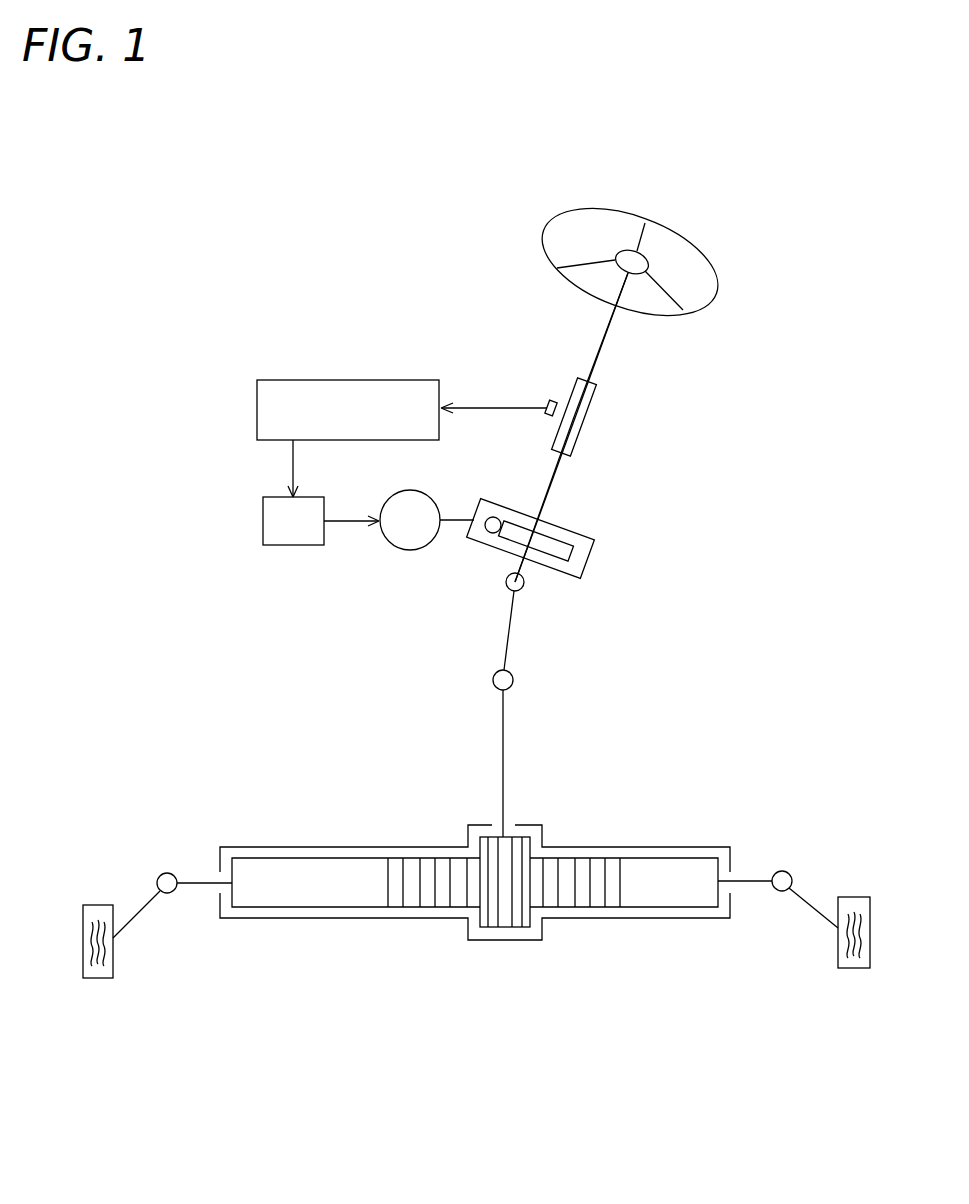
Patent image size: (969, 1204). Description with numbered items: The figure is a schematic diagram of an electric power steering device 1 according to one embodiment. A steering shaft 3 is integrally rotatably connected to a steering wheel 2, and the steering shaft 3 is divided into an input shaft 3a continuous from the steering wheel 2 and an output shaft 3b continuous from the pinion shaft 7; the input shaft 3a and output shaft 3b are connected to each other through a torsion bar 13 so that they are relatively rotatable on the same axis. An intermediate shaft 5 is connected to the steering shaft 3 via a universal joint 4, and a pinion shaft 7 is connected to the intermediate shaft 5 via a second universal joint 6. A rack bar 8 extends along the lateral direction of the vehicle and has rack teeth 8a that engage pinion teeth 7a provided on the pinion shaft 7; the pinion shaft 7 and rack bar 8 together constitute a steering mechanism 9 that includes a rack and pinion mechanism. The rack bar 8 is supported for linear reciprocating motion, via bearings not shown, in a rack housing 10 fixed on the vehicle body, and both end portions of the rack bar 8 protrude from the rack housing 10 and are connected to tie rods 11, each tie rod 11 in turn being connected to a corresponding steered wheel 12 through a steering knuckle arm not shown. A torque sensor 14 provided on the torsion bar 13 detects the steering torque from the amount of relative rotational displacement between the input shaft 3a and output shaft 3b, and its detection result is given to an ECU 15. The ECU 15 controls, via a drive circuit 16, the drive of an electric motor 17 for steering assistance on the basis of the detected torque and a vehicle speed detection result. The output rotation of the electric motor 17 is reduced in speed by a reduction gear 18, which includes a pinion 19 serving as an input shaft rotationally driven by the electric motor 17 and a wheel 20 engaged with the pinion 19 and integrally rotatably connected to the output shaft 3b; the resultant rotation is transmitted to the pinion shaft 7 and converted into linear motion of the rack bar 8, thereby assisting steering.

The electric power steering device 1 is at (740, 208).
The steering wheel 2 is at (620, 212).
The steering shaft 3 is at (607, 327).
The input shaft 3a is at (597, 351).
The output shaft 3b is at (553, 484).
The universal joint 4 is at (525, 583).
The intermediate shaft 5 is at (510, 630).
The universal joint 6 is at (513, 680).
The pinion shaft 7 is at (505, 787).
The pinion teeth 7a is at (513, 928).
The rack bar 8 is at (578, 908).
The rack teeth 8a is at (444, 898).
The steering mechanism 9 is at (548, 940).
The rack housing 10 is at (373, 847).
The tie rod 11 is at (147, 907).
The steered wheel 12 is at (98, 978).
The torsion bar 13 is at (585, 418).
The torque sensor 14 is at (549, 400).
The ECU 15 is at (287, 380).
The drive circuit 16 is at (263, 520).
The electric motor 17 is at (410, 549).
The reduction gear 18 is at (596, 548).
The pinion 19 is at (493, 530).
The wheel 20 is at (563, 550).